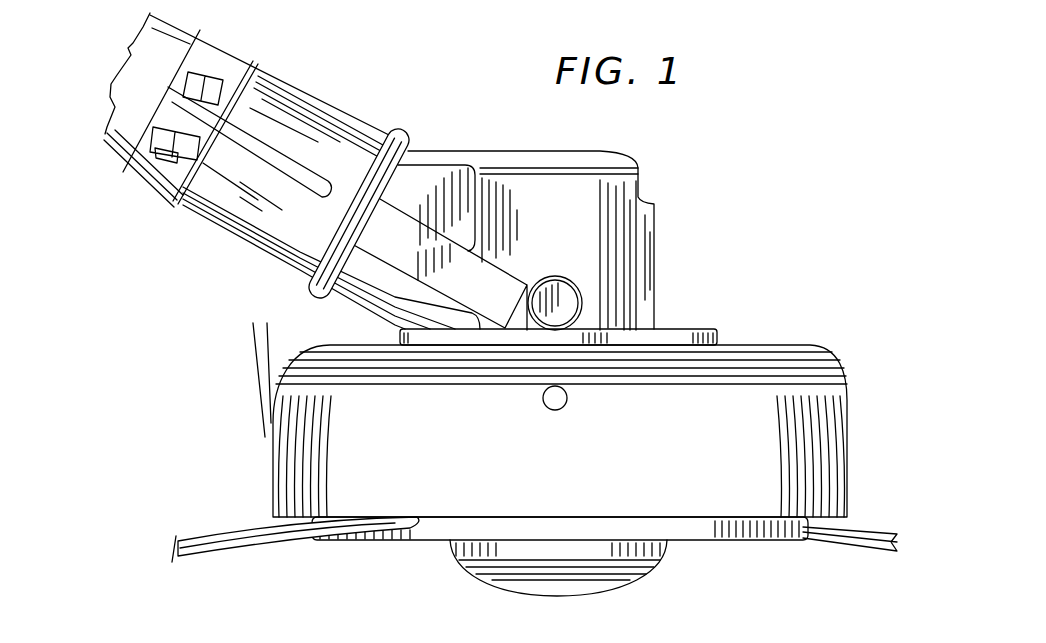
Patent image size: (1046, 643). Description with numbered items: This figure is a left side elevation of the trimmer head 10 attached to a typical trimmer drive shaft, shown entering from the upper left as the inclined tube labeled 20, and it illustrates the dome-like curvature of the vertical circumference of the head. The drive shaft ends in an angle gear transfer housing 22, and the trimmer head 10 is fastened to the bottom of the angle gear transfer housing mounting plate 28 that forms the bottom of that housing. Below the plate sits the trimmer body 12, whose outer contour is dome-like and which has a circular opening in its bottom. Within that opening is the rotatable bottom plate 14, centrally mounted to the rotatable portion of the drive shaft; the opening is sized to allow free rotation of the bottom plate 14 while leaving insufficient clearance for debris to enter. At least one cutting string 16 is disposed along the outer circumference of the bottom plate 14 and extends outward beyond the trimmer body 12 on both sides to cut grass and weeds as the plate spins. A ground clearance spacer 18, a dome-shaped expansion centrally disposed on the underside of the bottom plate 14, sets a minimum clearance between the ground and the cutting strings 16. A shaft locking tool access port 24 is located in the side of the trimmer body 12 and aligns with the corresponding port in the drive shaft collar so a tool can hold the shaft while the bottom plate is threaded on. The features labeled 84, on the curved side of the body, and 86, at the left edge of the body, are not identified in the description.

The trimmer head 10 is at (772, 330).
The trimmer body 12 is at (847, 412).
The rotatable bottom plate 14 is at (688, 530).
The cutting string 16 is at (220, 549).
The ground clearance spacer 18 is at (470, 582).
The tube 20 is at (286, 261).
The angle gear transfer housing 22 is at (641, 184).
The shaft locking tool access port 24 is at (568, 399).
The angle gear transfer housing mounting plate 28 is at (713, 330).
The ribs 84 is at (852, 444).
The gap 86 is at (272, 332).